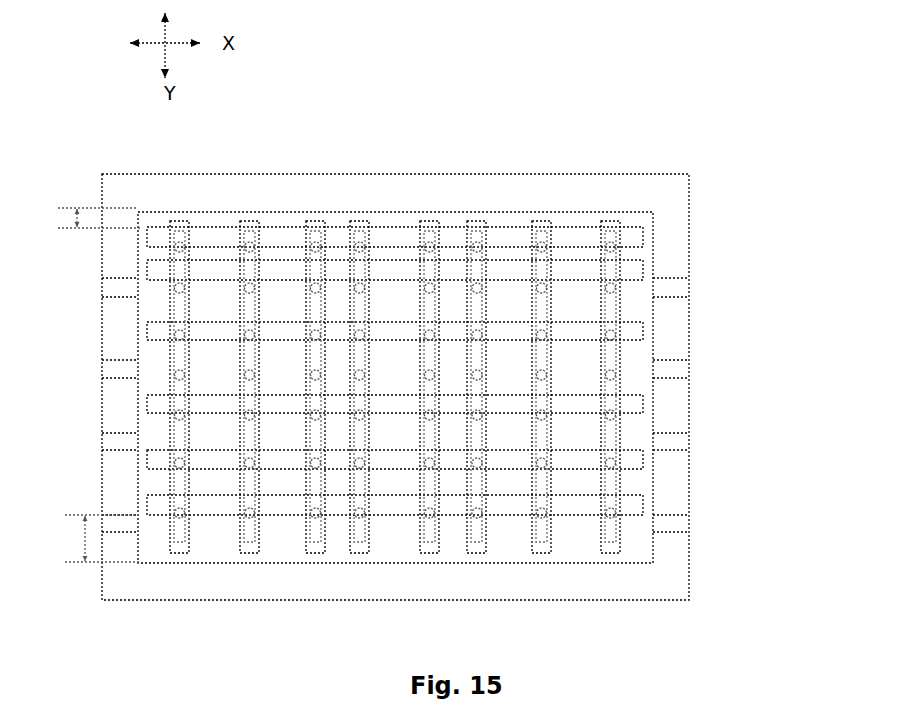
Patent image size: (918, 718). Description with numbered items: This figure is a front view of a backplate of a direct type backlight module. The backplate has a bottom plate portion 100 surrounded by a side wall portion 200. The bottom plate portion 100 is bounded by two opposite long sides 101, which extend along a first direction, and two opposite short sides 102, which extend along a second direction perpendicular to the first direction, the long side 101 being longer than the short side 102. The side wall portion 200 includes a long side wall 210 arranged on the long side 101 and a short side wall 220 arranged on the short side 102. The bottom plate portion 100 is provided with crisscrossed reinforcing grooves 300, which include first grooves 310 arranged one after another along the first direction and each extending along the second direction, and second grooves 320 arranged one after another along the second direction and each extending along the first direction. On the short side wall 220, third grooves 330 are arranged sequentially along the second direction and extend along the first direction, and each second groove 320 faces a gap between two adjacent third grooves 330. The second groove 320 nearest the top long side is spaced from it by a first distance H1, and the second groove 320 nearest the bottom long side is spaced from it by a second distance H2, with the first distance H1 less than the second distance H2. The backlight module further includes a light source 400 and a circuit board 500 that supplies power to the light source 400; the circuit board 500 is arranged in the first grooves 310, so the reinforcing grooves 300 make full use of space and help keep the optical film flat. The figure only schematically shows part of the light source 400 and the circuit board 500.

The bottom plate portion 100 is at (632, 482).
The long side 101 is at (417, 172).
The short side 102 is at (100, 358).
The side wall portion 200 is at (461, 350).
The long side wall 210 is at (605, 197).
The short side wall 220 is at (665, 243).
The reinforcing groove 300 is at (499, 379).
The first groove 310 is at (701, 446).
The second groove 320 is at (635, 330).
The third groove 330 is at (673, 288).
The light source 400 is at (545, 520).
The circuit board 500 is at (613, 498).
The first distance H1 is at (81, 222).
The second distance H2 is at (85, 540).